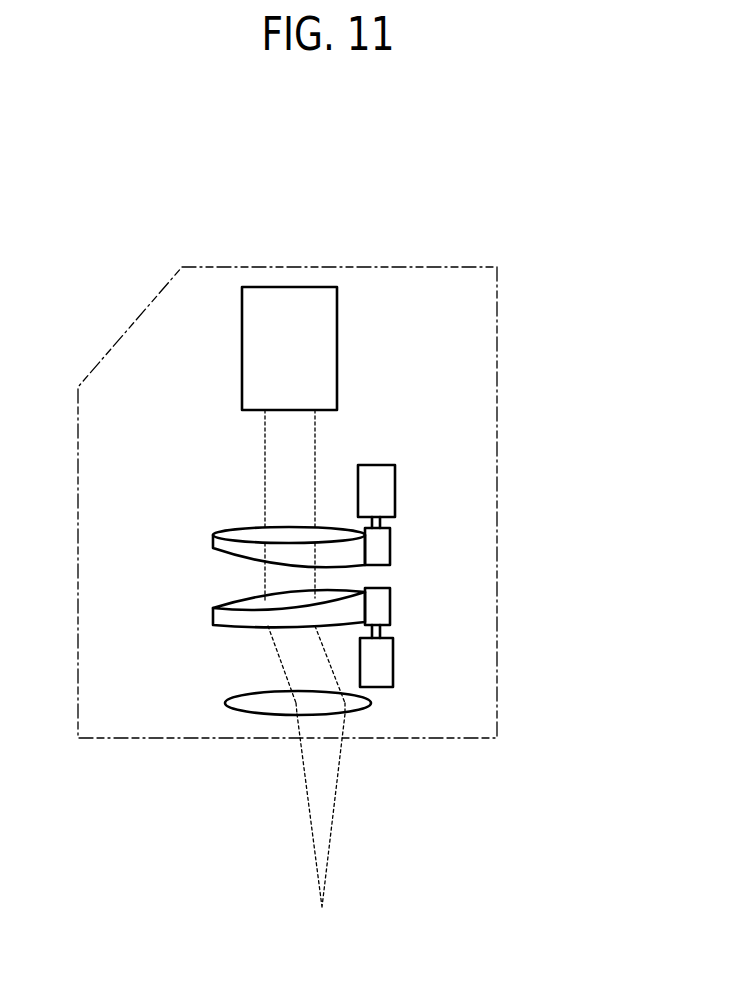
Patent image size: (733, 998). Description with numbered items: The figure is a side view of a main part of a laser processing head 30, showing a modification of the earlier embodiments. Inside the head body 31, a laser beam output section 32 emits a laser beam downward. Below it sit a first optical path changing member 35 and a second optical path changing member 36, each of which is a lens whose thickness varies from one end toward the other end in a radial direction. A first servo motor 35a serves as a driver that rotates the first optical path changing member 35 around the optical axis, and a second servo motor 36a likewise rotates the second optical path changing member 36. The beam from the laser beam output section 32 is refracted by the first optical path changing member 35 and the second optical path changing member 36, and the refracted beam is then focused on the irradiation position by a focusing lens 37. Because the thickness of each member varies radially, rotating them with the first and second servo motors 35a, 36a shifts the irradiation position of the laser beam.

The laser processing head 30 is at (382, 247).
The head body 31 is at (497, 318).
The laser beam output section 32 is at (283, 287).
The first optical path changing member 35 is at (213, 535).
The first servo motor 35a is at (395, 490).
The second optical path changing member 36 is at (213, 606).
The second servo motor 36a is at (393, 665).
The focusing lens 37 is at (250, 712).